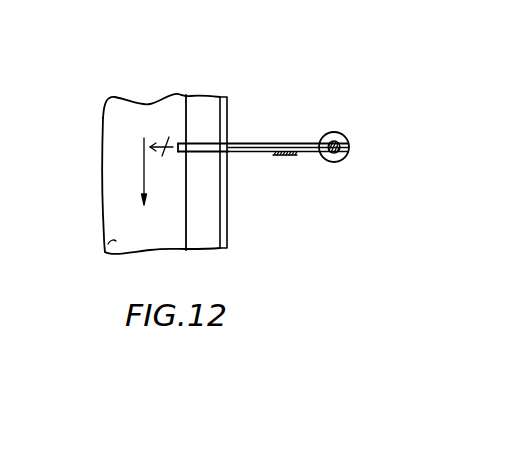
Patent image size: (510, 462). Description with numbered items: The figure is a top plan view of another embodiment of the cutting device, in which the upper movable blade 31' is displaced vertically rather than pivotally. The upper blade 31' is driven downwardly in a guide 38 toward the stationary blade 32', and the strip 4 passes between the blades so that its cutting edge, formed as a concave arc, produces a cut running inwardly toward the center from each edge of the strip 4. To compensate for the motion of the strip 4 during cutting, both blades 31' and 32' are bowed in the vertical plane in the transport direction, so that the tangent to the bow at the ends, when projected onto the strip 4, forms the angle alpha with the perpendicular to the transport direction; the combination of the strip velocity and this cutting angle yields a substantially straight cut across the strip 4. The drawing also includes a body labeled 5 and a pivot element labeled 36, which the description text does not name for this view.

The support block 5 is at (105, 244).
The strip 4 is at (210, 225).
The upper movable blade 31' is at (263, 107).
The stationary blade 32' is at (288, 180).
The guide 38 is at (285, 157).
The pivot roller 36 is at (333, 132).